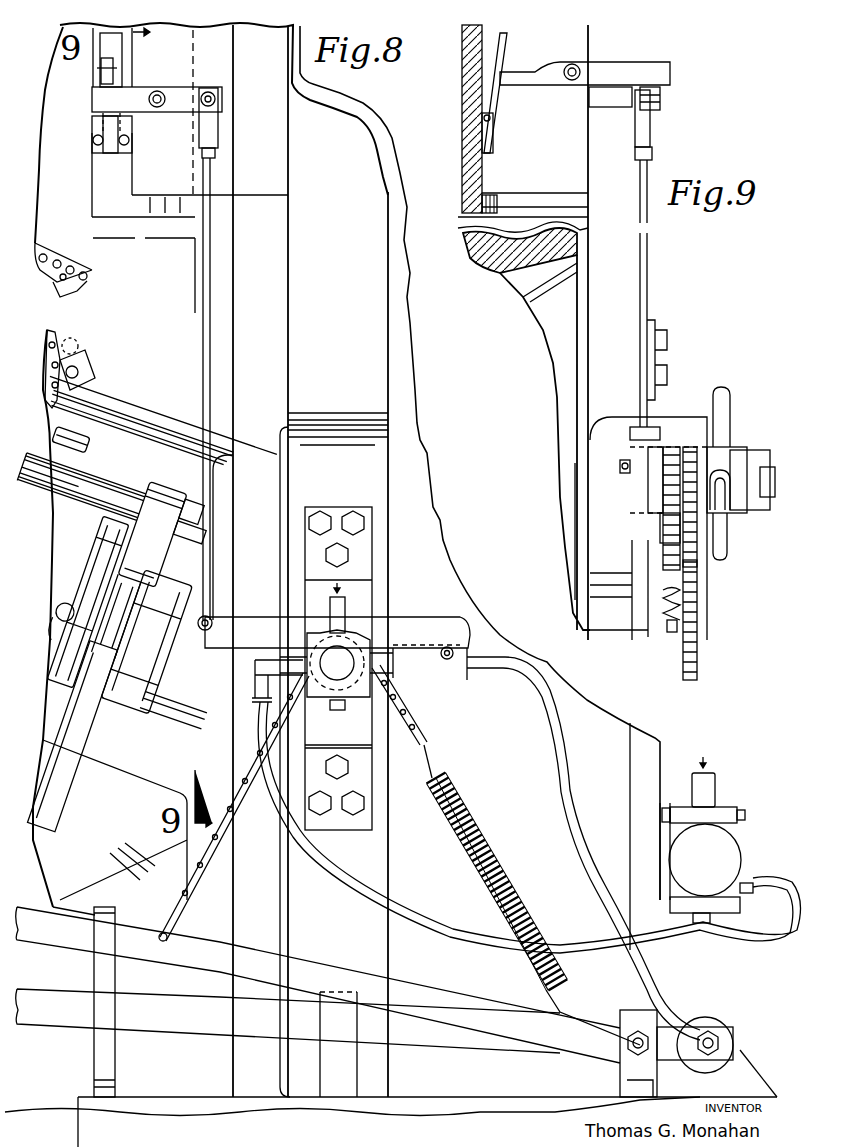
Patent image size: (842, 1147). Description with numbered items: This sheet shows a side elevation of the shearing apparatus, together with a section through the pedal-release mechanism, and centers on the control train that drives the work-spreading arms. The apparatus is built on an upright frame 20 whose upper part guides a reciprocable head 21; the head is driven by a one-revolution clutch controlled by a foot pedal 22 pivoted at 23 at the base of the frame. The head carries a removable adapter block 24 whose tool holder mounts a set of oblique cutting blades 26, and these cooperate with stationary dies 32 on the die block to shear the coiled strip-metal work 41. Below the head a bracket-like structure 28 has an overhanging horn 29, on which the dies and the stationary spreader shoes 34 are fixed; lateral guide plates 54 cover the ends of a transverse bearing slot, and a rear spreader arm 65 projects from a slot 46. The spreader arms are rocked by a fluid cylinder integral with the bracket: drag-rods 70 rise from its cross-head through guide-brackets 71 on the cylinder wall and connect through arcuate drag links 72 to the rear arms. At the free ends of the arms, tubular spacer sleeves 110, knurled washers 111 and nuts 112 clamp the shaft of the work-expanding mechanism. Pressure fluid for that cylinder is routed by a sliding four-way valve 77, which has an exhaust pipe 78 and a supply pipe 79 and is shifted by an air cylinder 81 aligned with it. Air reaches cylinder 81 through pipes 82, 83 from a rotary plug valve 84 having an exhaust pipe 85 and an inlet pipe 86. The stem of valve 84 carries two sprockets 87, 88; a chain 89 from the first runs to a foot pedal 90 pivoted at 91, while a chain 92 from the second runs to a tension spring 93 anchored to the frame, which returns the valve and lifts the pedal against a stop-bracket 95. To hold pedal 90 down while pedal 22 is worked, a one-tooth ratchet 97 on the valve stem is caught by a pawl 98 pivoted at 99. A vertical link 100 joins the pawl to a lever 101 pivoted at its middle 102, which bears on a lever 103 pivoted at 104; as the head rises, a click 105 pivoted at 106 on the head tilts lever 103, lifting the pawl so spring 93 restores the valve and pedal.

In FIG. 8, the upright support or frame 20 is at (288, 323).
In FIG. 9, the upright support or frame 20 is at (625, 315).
In FIG. 8, the reciprocable head 21 is at (42, 107).
In FIG. 9, the reciprocable head 21 is at (462, 90).
In FIG. 8, the foot pedal 22 is at (58, 1025).
In FIG. 8, the pivot 23 is at (715, 1043).
In FIG. 8, the adapter block 24 is at (47, 184).
In FIG. 8, the cutting tools or blades 26 is at (68, 288).
In FIG. 8, the bracket-like structure 28 is at (232, 425).
In FIG. 8, the horn 29 is at (110, 453).
In FIG. 8, the dies or stationary shear elements 32 is at (72, 342).
In FIG. 8, the stationary spreader shoes 34 is at (60, 400).
In FIG. 8, the coil of strip metal 41 is at (85, 368).
In FIG. 8, the slot 46 is at (163, 618).
In FIG. 8, the lateral guide plates 54 is at (60, 625).
In FIG. 8, the spreader arm 65 is at (147, 557).
In FIG. 8, the drag-rods 70 is at (62, 760).
In FIG. 8, the guide-brackets 71 is at (46, 845).
In FIG. 8, the arcuate drag links 72 is at (125, 598).
In FIG. 8, the four-way valve 77 is at (737, 815).
In FIG. 8, the exhaust pipe 78 is at (698, 916).
In FIG. 8, the fluid supply pipe 79 is at (716, 795).
In FIG. 8, the double-acting fluid pressure cylinder 81 is at (740, 858).
In FIG. 8, the inlet-and-outlet pipe 82 is at (580, 798).
In FIG. 8, the inlet-and-outlet pipe 83 is at (570, 953).
In FIG. 9, the inlet-and-outlet pipe 83 is at (727, 545).
In FIG. 8, the four-way rotary plug valve 84 is at (362, 640).
In FIG. 9, the four-way rotary plug valve 84 is at (742, 450).
In FIG. 8, the exhaust pipe 85 is at (347, 708).
In FIG. 8, the fluid inlet pipe 86 is at (346, 607).
In FIG. 9, the fluid inlet pipe 86 is at (730, 405).
In FIG. 8, the sprocket 87 is at (378, 700).
In FIG. 9, the sprocket 87 is at (692, 447).
In FIG. 9, the sprocket 88 is at (674, 447).
In FIG. 8, the sprocket chain 89 is at (235, 786).
In FIG. 9, the sprocket chain 89 is at (698, 612).
In FIG. 8, the foot pedal 90 is at (320, 965).
In FIG. 8, the pivot 91 is at (660, 1030).
In FIG. 8, the sprocket chain 92 is at (415, 745).
In FIG. 9, the sprocket chain 92 is at (660, 532).
In FIG. 8, the tension spring 93 is at (490, 848).
In FIG. 9, the tension spring 93 is at (672, 622).
In FIG. 8, the stop-bracket 95 is at (93, 968).
In FIG. 8, the one-tooth ratchet 97 is at (395, 637).
In FIG. 9, the one-tooth ratchet 97 is at (650, 495).
In FIG. 8, the pawl 98 is at (208, 631).
In FIG. 9, the pawl 98 is at (650, 430).
In FIG. 8, the pivot 99 is at (448, 647).
In FIG. 9, the pivot 99 is at (622, 470).
In FIG. 8, the link 100 is at (212, 270).
In FIG. 9, the link 100 is at (648, 270).
In FIG. 8, the lever 101 is at (212, 88).
In FIG. 9, the lever 101 is at (650, 118).
In FIG. 8, the pivot 102 is at (158, 108).
In FIG. 9, the pivot 102 is at (660, 100).
In FIG. 8, the lever 103 is at (100, 60).
In FIG. 9, the lever 103 is at (655, 62).
In FIG. 8, the pivot 104 is at (100, 72).
In FIG. 9, the pivot 104 is at (577, 70).
In FIG. 8, the pawl or click 105 is at (122, 48).
In FIG. 9, the pawl or click 105 is at (507, 40).
In FIG. 8, the pivot 106 is at (93, 118).
In FIG. 9, the pivot 106 is at (483, 117).
In FIG. 8, the tubular spacer sleeves 110 is at (77, 505).
In FIG. 8, the knurled washers 111 is at (197, 503).
In FIG. 8, the nuts 112 is at (203, 533).